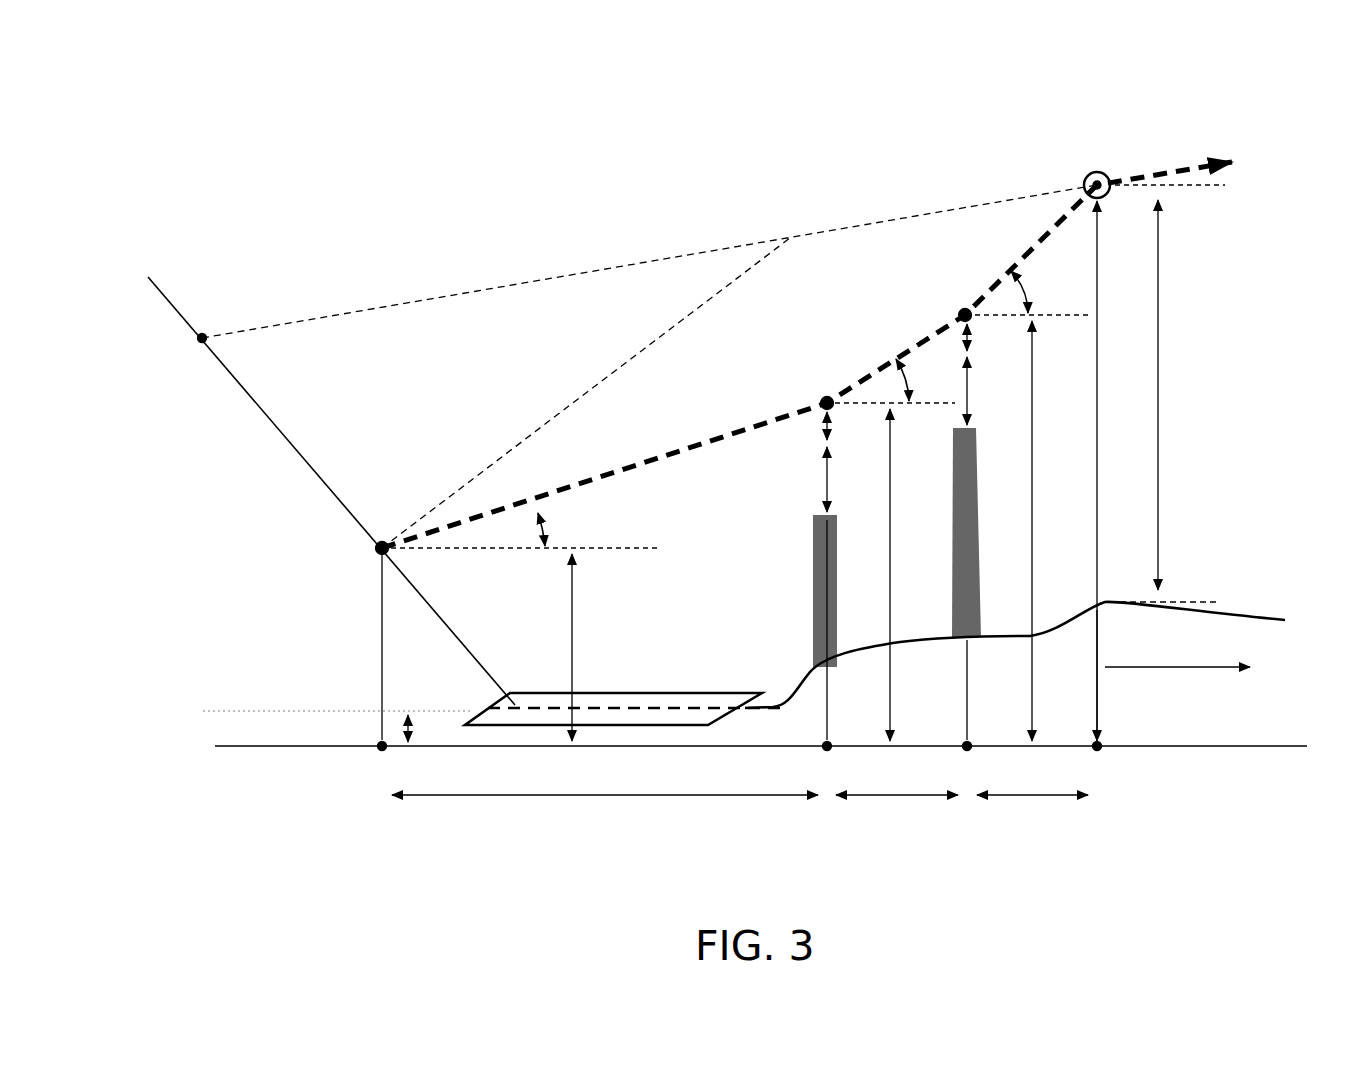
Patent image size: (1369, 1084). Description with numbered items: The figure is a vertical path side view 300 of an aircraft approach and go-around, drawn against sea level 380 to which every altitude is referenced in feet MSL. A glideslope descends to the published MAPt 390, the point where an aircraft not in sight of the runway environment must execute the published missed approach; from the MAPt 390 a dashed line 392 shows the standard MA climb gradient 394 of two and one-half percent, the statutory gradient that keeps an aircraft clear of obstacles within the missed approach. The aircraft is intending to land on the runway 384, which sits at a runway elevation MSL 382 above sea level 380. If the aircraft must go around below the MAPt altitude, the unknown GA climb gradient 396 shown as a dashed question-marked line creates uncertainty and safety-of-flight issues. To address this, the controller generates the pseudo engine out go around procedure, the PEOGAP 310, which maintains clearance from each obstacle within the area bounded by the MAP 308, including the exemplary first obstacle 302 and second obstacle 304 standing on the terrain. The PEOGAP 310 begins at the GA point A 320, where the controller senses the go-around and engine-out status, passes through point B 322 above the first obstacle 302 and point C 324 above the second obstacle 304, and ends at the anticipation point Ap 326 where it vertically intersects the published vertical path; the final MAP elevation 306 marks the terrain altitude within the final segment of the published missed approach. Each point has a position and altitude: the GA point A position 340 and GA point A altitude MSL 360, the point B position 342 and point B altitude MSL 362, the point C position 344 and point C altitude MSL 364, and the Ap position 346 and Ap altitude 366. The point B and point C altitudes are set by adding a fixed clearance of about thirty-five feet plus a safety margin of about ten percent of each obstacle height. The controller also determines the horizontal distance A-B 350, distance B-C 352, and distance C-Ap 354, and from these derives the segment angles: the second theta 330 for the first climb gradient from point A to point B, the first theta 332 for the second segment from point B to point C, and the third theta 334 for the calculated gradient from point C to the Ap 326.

The vertical path side view 300 is at (112, 122).
The obstacle 1 302 is at (812, 572).
The obstacle 2 304 is at (955, 505).
The final MAP elevation 306 is at (1178, 602).
The area bounded by the MAP 308 is at (1168, 758).
The pseudo engine out go around procedure (PEOGAP) 310 is at (720, 412).
The GA point A 320 is at (378, 553).
The point B 322 is at (826, 395).
The point C 324 is at (964, 307).
The anticipation point (Ap) 326 is at (1083, 180).
The theta 2 330 is at (540, 532).
The theta 1 332 is at (902, 370).
The theta 3 334 is at (1020, 285).
The GA point A position 340 is at (382, 752).
The point B position 342 is at (827, 752).
The point C position 344 is at (967, 752).
The Ap position 346 is at (1097, 752).
The distance A-B 350 is at (622, 795).
The distance B-C 352 is at (868, 795).
The distance C-Ap 354 is at (1005, 795).
The GA point A altitude MSL 360 is at (570, 622).
The point B altitude MSL 362 is at (889, 562).
The point C altitude MSL 364 is at (1030, 482).
The Ap altitude 366 is at (1096, 412).
The sea level 380 is at (213, 747).
The runway elevation MSL 382 is at (412, 728).
The runway 384 is at (630, 692).
The published MAPt 390 is at (199, 340).
The standard missed approach climb gradient line 392 is at (862, 213).
The standard MA climb gradient 394 is at (467, 258).
The GA climb gradient 396 is at (507, 412).